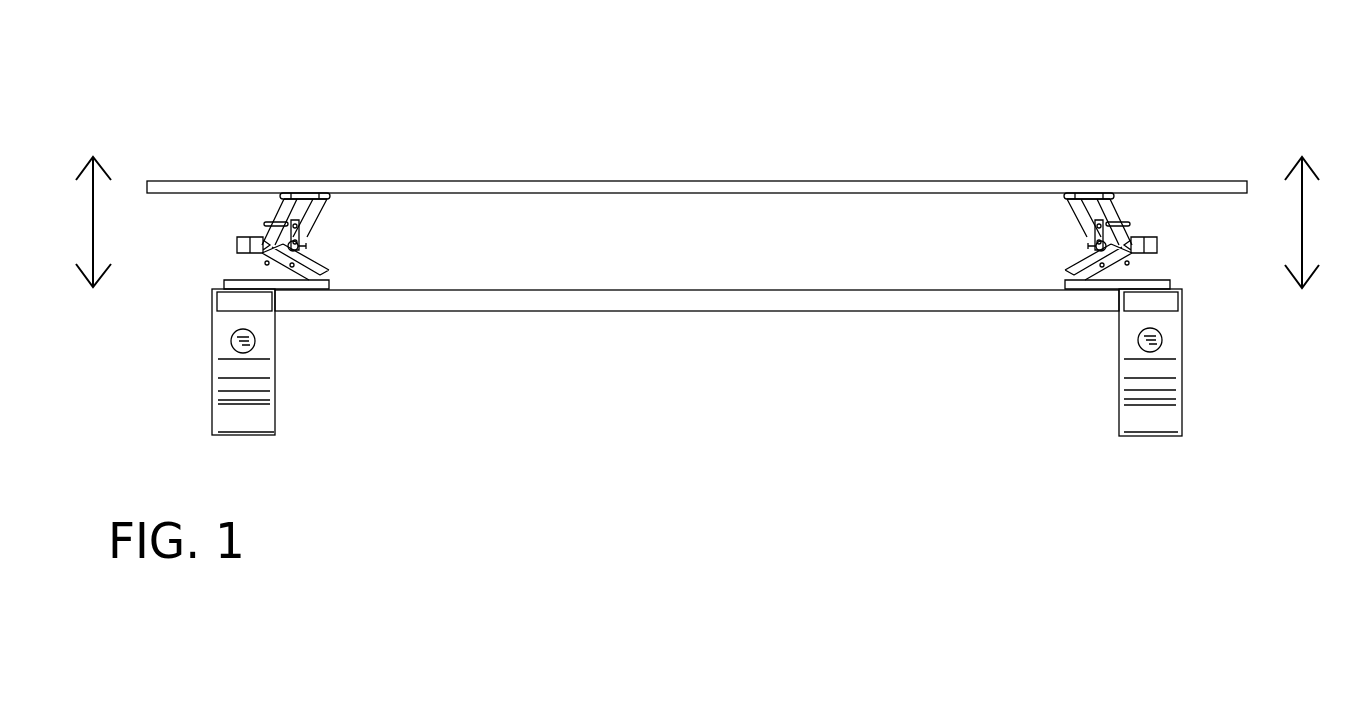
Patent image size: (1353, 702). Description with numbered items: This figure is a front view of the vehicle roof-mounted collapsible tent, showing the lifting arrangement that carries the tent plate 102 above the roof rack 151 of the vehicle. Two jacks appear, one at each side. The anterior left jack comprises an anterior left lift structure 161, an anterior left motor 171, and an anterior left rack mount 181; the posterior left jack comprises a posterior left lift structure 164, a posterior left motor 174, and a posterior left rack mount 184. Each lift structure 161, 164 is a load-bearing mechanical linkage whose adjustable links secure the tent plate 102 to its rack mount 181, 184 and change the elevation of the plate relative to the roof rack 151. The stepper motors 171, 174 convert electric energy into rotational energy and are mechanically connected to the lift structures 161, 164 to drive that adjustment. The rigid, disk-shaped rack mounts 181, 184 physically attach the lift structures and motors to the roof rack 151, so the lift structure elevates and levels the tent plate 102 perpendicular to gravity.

The tent plate 102 is at (1167, 181).
The roof rack 151 is at (1182, 367).
The anterior left lift structure 161 is at (305, 273).
The posterior left lift structure 164 is at (1077, 213).
The anterior left motor 171 is at (237, 245).
The posterior left motor 174 is at (1160, 243).
The anterior left rack mount 181 is at (315, 287).
The posterior left rack mount 184 is at (1093, 288).